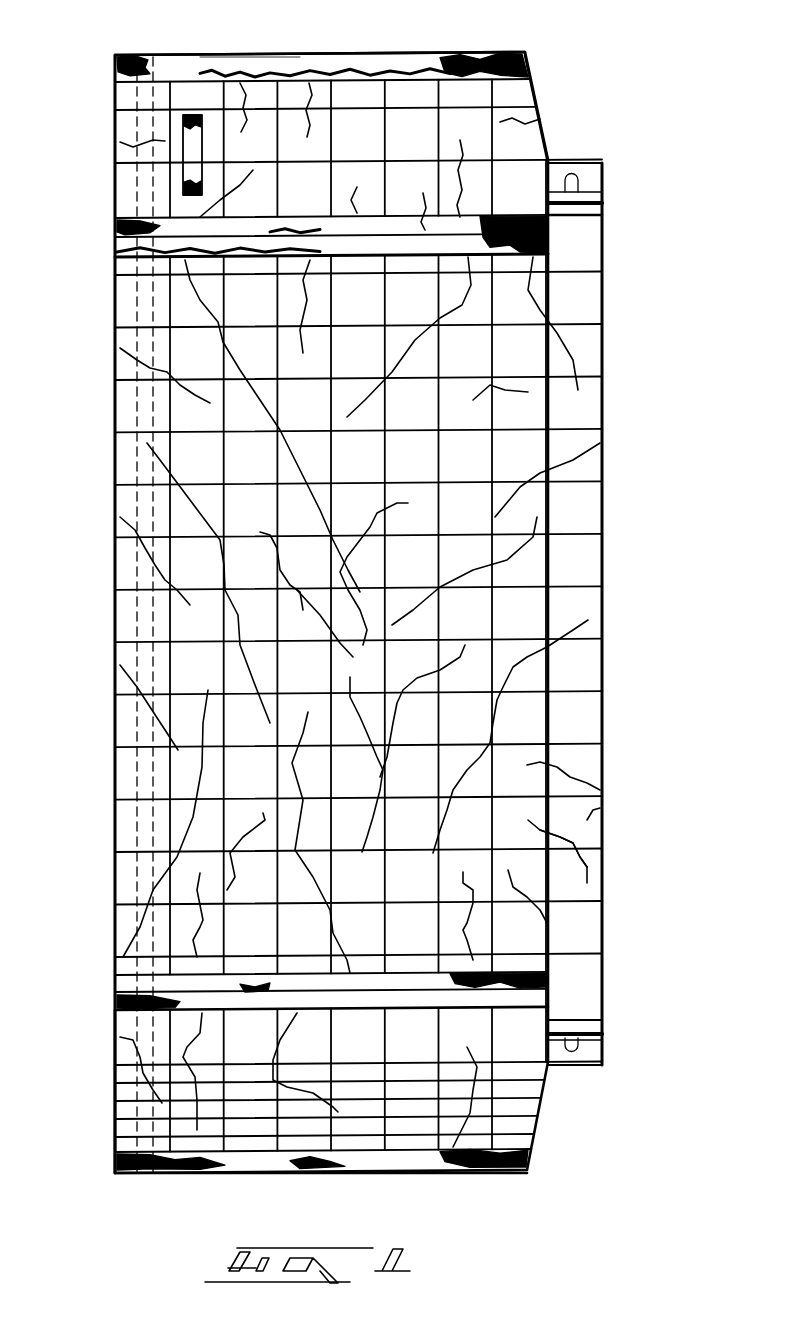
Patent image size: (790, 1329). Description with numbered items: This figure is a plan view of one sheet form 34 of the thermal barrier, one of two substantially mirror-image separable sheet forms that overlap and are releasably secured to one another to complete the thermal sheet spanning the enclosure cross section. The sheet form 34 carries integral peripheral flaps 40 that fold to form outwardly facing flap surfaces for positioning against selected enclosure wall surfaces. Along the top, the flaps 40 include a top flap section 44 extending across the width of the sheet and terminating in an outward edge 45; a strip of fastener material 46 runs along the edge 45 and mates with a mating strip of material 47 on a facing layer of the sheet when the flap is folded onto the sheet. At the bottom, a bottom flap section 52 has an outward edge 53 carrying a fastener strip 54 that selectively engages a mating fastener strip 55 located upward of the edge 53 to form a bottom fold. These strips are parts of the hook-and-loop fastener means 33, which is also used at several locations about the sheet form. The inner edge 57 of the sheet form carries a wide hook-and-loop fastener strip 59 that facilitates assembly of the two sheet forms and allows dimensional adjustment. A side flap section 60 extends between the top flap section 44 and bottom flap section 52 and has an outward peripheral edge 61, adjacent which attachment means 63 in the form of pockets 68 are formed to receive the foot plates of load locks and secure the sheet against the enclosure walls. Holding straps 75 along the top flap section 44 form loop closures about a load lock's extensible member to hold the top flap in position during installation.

The fastener means 33 is at (302, 216).
The sheet form 34 is at (600, 745).
The integral peripheral flaps 40 is at (515, 156).
The top flap section 44 is at (522, 98).
The outward edge 45 is at (410, 53).
The strip of fastener material 46 is at (328, 58).
The mating strip of material 47 is at (360, 615).
The bottom flap section 52 is at (115, 1110).
The outward edge 53 is at (437, 1173).
The fastener strip 54 is at (225, 1170).
The mating fastener strip 55 is at (380, 960).
The inner edge 57 is at (115, 812).
The hook-and-loop fastener strip 59 is at (137, 728).
The side flap section 60 is at (605, 813).
The outward peripheral edge 61 is at (605, 868).
The attachment means 63 is at (603, 188).
The pocket 68 is at (585, 163).
The holding strap 75 is at (203, 152).